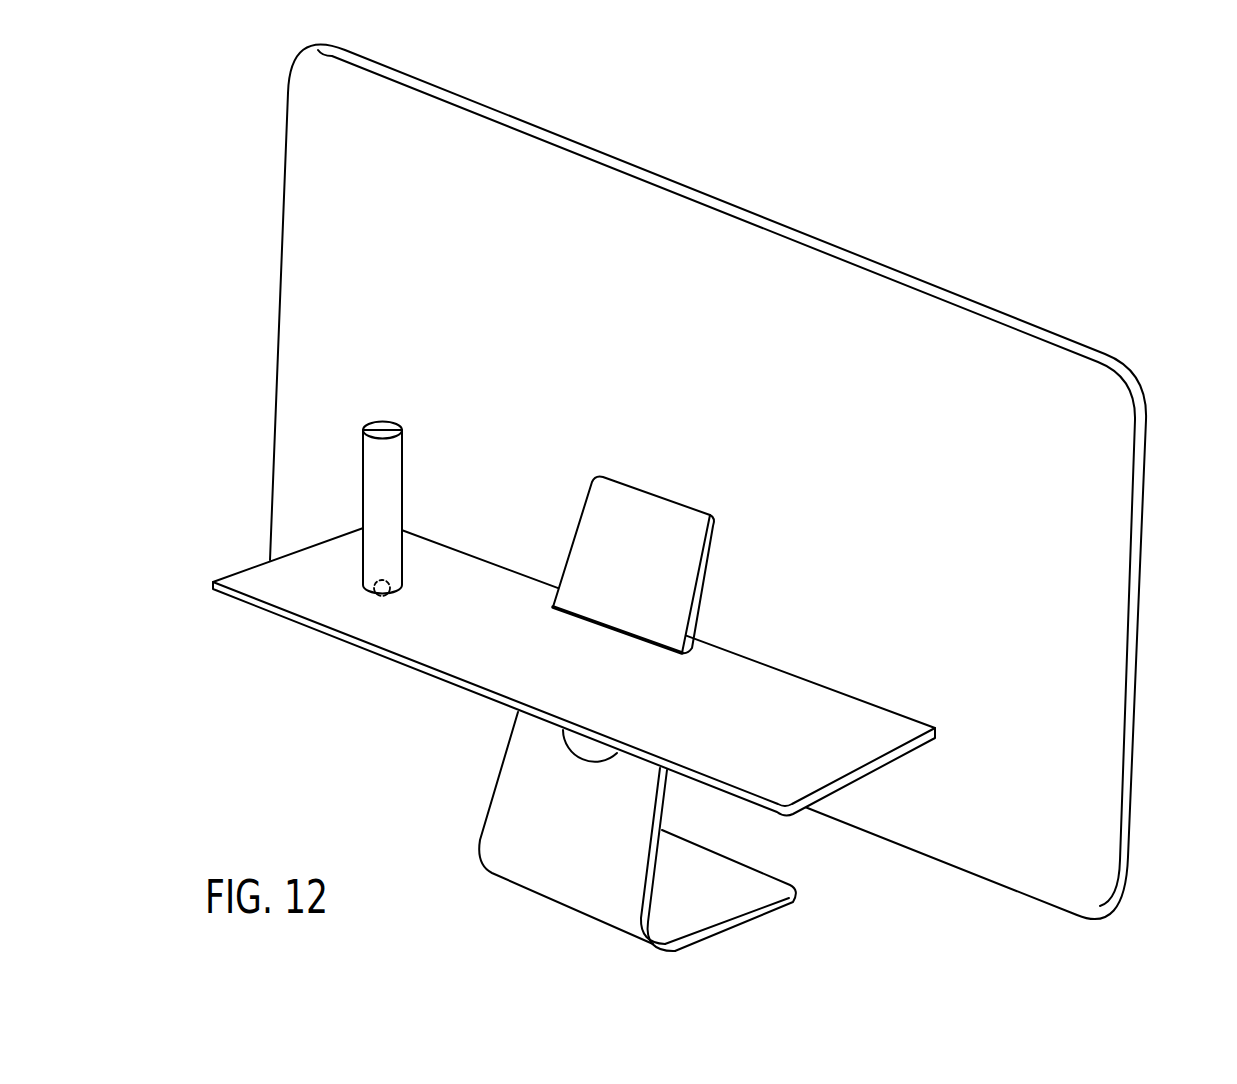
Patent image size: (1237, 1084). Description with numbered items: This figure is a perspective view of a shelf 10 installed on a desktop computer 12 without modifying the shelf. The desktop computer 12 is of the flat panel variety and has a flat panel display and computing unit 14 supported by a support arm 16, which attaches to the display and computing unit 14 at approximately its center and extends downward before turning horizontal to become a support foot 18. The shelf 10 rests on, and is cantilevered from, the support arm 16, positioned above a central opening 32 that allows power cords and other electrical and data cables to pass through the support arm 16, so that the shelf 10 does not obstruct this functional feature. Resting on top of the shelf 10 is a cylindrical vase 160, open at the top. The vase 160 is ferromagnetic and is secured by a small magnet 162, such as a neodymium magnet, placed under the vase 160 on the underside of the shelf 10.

The shelf 10 is at (256, 561).
The desktop computer 12 is at (1146, 479).
The flat panel display and computing unit 14 is at (300, 190).
The support arm 16 is at (505, 793).
The support foot 18 is at (748, 899).
The central opening 32 is at (587, 750).
The cylindrical vase 160 is at (390, 484).
The magnet 162 is at (386, 596).